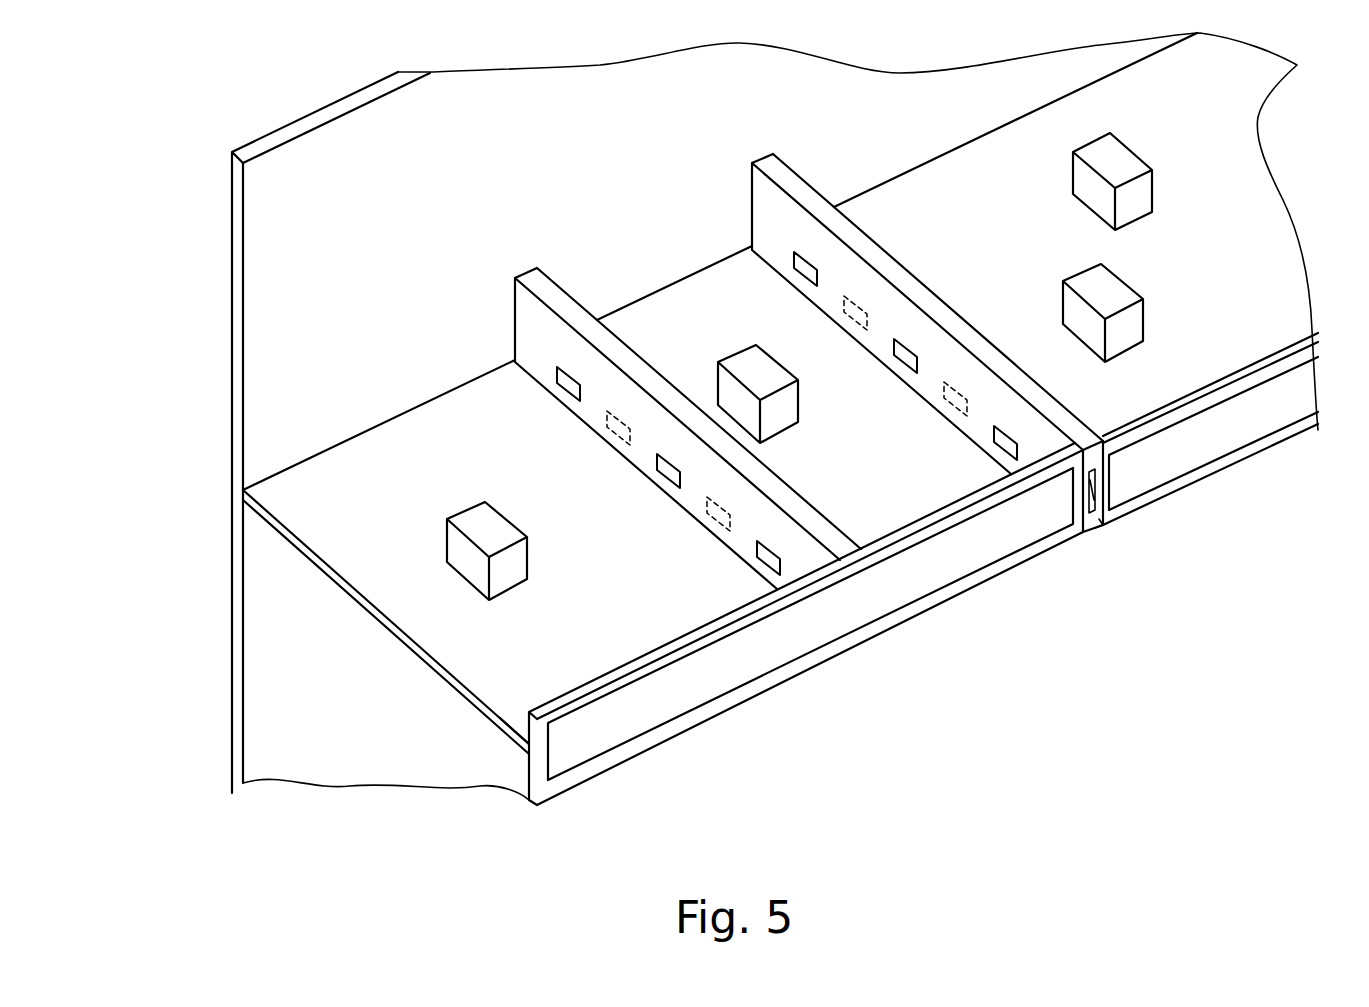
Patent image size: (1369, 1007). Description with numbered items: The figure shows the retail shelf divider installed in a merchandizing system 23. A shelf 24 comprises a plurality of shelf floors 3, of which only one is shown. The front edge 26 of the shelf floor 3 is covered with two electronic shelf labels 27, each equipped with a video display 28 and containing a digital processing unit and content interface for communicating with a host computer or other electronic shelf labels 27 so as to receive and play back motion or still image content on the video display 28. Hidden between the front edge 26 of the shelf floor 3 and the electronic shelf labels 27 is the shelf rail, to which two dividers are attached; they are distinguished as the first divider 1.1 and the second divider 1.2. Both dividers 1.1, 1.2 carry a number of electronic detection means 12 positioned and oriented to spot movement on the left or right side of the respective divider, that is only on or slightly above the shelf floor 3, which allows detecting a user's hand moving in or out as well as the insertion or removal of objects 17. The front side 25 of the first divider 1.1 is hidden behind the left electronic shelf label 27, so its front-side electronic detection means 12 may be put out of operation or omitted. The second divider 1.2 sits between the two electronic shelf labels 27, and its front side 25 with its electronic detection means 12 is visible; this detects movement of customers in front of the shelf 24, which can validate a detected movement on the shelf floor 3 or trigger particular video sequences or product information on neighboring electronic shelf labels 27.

The shelf 24 is at (228, 193).
The shelf floor 3 is at (432, 660).
The front edge 26 is at (518, 757).
The first divider 1.1 is at (818, 532).
The second divider 1.2 is at (1052, 402).
The electronic shelf label 27 is at (582, 786).
The video display 28 is at (666, 712).
The front side 25 is at (1103, 527).
The object 17 is at (483, 506).
The electronic detection means 12 is at (560, 392).
The merchandizing system 23 is at (1124, 648).